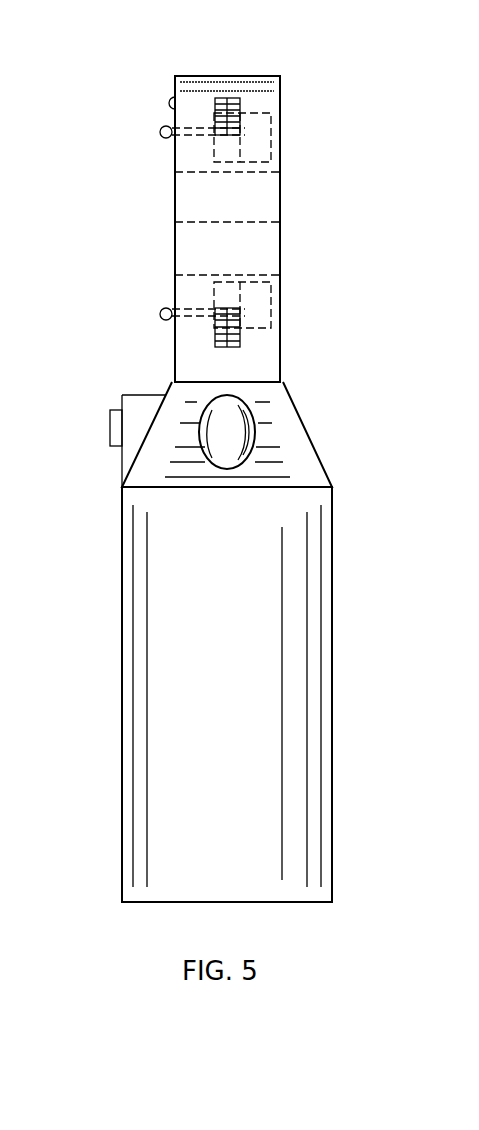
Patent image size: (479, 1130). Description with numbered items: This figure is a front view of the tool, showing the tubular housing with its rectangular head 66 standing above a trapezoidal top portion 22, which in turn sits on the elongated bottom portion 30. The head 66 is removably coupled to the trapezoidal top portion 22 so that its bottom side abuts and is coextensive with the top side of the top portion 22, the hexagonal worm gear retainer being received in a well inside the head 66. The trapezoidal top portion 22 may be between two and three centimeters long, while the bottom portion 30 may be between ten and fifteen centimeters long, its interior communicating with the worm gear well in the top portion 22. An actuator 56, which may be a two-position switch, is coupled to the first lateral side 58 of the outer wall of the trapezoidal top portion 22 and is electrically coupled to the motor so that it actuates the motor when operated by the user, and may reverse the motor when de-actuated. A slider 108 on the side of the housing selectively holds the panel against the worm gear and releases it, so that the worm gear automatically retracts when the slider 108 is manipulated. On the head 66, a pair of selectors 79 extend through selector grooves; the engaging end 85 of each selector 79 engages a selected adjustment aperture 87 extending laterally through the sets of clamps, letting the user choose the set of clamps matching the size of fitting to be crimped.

The trapezoidal top portion 22 is at (147, 416).
The bottom portion 30 is at (114, 686).
The actuator 56 is at (258, 432).
The first lateral side 58 is at (302, 467).
The head 66 is at (164, 86).
The selector 79 is at (160, 132).
The engaging end 85 is at (240, 134).
The adjustment aperture 87 is at (237, 112).
The slider 108 is at (110, 427).